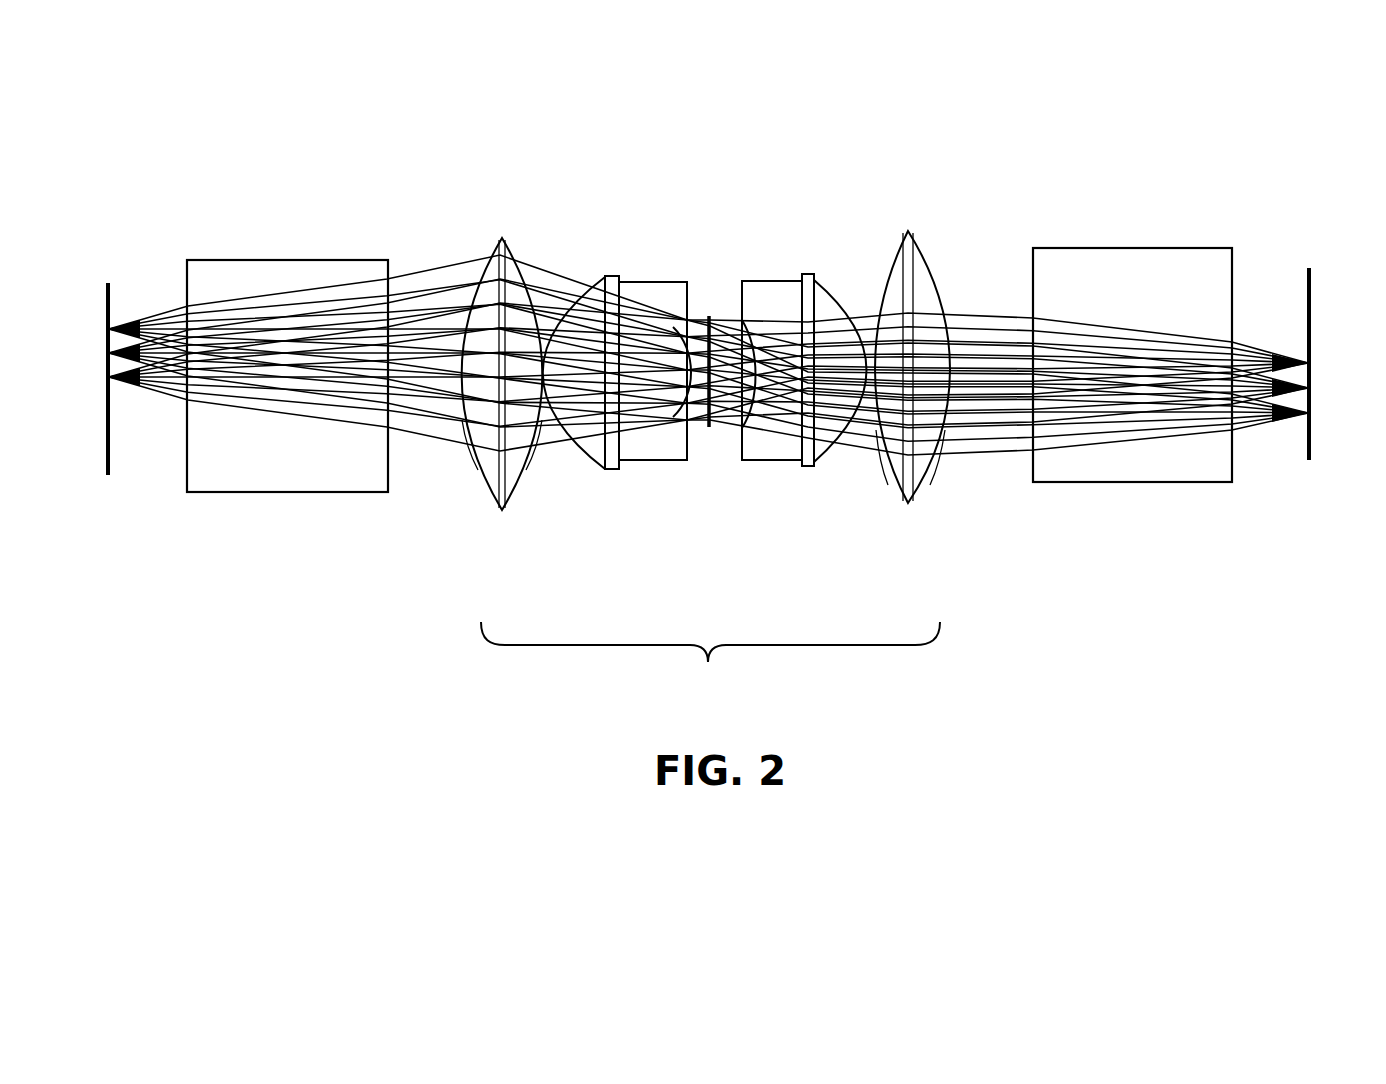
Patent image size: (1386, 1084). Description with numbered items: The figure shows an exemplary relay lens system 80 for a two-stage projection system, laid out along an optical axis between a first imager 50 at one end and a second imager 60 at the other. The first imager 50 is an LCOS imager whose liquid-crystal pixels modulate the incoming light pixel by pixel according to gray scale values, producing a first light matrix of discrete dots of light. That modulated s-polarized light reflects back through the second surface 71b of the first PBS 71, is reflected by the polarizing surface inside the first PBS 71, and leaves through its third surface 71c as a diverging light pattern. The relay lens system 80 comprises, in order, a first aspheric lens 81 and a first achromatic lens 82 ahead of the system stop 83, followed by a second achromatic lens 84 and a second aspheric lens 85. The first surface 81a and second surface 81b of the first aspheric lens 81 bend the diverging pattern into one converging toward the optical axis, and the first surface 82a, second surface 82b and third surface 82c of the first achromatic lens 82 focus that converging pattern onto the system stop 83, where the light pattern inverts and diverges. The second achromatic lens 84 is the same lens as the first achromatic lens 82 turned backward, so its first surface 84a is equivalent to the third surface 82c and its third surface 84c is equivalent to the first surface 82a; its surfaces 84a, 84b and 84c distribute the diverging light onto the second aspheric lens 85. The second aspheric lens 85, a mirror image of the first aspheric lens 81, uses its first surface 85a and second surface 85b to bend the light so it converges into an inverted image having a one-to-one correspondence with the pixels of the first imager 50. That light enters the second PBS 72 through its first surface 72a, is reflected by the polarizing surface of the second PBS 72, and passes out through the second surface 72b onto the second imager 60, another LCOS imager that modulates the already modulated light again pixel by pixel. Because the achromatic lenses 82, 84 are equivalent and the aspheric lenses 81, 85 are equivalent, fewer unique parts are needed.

The first imager 50 is at (106, 455).
The second imager 60 is at (1312, 440).
The first PBS 71 is at (288, 492).
The second surface 71b is at (183, 460).
The third surface 71c is at (395, 472).
The second PBS 72 is at (1133, 482).
The first surface 72a is at (1030, 468).
The second surface 72b is at (1240, 457).
The relay lens system 80 is at (710, 663).
The first aspheric lens 81 is at (502, 510).
The first surface 81a is at (478, 472).
The second surface 81b is at (526, 480).
The first achromatic lens 82 is at (629, 454).
The first surface 82a is at (585, 462).
The second surface 82b is at (630, 470).
The third surface 82c is at (700, 462).
The system stop 83 is at (712, 316).
The second achromatic lens 84 is at (783, 453).
The first surface 84a is at (738, 447).
The second surface 84b is at (799, 466).
The third surface 84c is at (834, 458).
The second aspheric lens 85 is at (907, 503).
The first surface 85a is at (888, 486).
The second surface 85b is at (933, 488).